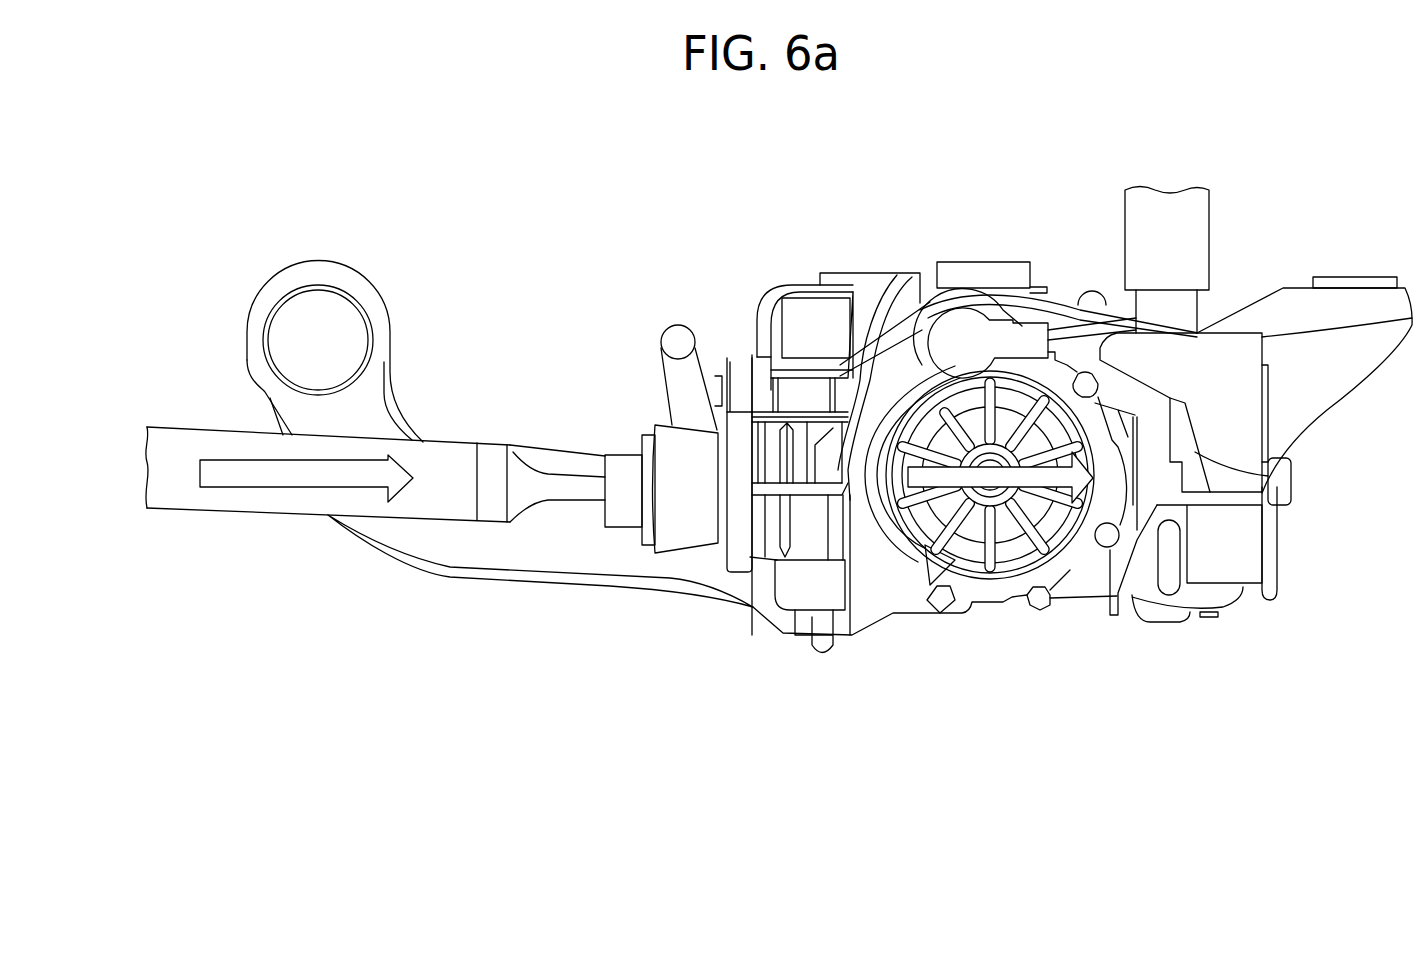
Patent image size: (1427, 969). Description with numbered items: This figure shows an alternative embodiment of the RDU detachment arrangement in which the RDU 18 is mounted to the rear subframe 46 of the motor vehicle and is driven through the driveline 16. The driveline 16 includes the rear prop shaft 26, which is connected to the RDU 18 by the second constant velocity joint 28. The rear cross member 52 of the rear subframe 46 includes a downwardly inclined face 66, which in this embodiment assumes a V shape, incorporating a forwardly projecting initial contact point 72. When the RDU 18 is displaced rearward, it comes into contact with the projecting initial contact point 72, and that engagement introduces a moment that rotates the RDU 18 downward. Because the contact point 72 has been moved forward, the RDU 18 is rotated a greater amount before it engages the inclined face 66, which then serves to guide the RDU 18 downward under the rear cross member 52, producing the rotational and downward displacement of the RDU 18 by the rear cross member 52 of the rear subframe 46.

The driveline 16 is at (209, 396).
The rear prop shaft 26 is at (250, 497).
The second constant velocity joint 28 is at (620, 473).
The RDU 18 is at (1011, 555).
The forwardly projecting initial contact point 72 is at (1097, 347).
The rear subframe 46 is at (1296, 256).
The rear cross member 52 is at (1220, 395).
The downwardly inclined face 66 is at (1268, 476).